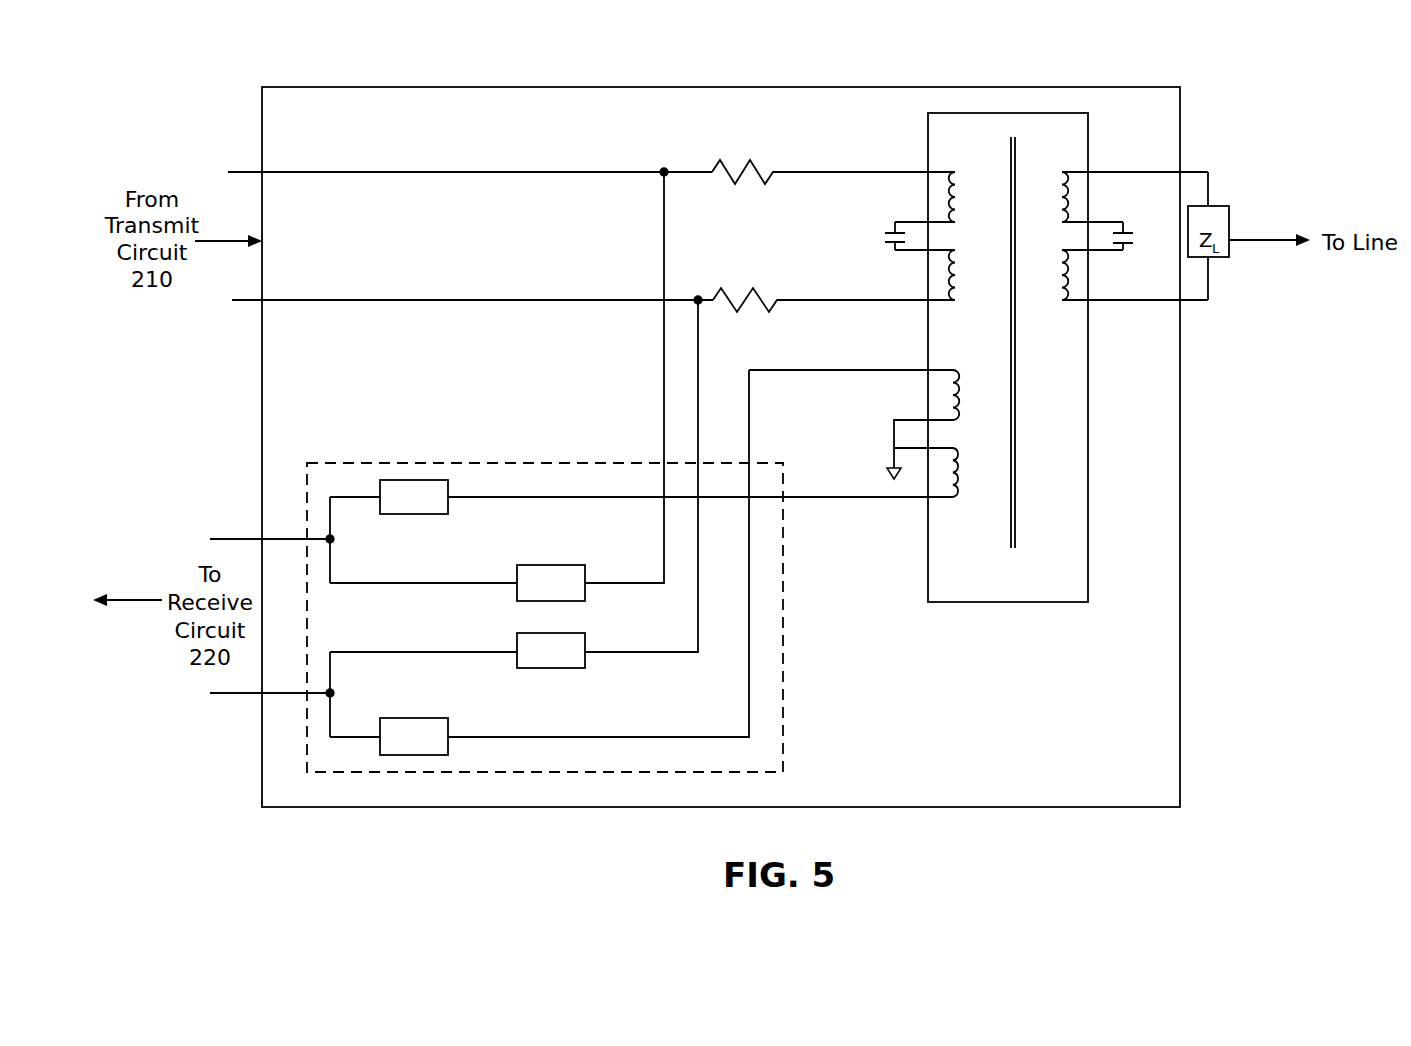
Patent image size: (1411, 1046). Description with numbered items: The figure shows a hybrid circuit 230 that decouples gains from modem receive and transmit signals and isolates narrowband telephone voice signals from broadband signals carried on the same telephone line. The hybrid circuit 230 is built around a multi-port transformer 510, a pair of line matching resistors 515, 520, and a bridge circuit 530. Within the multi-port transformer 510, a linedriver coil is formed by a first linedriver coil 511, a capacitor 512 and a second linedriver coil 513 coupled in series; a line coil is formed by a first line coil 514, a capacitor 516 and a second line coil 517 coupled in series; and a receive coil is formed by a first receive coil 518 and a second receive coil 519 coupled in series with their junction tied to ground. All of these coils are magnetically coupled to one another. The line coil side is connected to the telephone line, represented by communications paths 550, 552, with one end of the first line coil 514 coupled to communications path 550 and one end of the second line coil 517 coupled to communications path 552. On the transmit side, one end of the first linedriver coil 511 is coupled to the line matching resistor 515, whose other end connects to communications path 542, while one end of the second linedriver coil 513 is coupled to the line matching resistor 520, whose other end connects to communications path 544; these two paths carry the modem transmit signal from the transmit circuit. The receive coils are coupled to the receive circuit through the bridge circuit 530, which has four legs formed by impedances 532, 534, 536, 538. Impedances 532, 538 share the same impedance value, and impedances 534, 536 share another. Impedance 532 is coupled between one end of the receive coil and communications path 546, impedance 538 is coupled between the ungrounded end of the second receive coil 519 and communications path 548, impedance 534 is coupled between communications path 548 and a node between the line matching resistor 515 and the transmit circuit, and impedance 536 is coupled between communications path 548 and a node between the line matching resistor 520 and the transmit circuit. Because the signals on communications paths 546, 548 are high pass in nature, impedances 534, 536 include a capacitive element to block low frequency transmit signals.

The hybrid circuit 230 is at (1181, 97).
The multi-port transformer 510 is at (1089, 140).
The first linedriver coil 511 is at (958, 182).
The capacitor 512 is at (890, 228).
The second linedriver coil 513 is at (958, 257).
The first line coil 514 is at (1059, 182).
The line matching resistor 515 is at (745, 160).
The capacitor 516 is at (1130, 226).
The second line coil 517 is at (1059, 257).
The first receive coil 518 is at (958, 380).
The second receive coil 519 is at (958, 457).
The line matching resistor 520 is at (750, 288).
The bridge circuit 530 is at (784, 578).
The impedance 532 is at (435, 480).
The impedance 534 is at (585, 567).
The impedance 536 is at (585, 636).
The impedance 538 is at (448, 720).
The communications path 542 is at (383, 172).
The communications path 544 is at (395, 300).
The communications path 546 is at (235, 539).
The communications path 548 is at (240, 693).
The communications path 550 is at (1200, 172).
The communications path 552 is at (1200, 301).